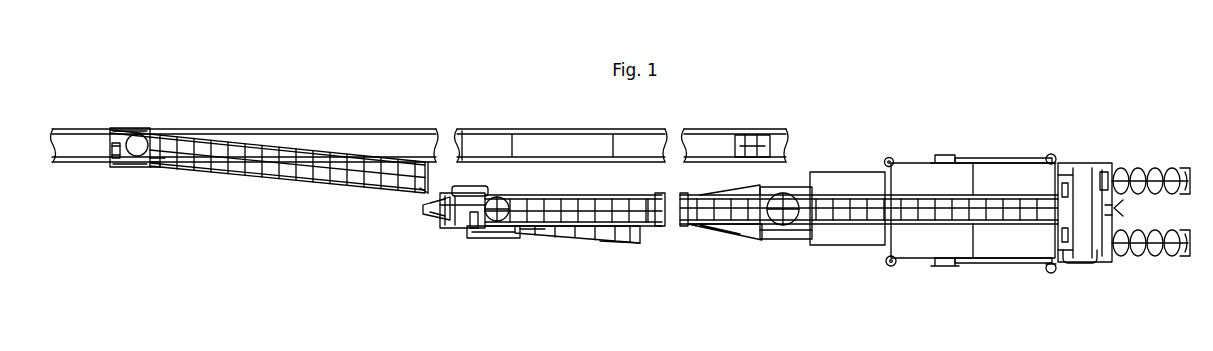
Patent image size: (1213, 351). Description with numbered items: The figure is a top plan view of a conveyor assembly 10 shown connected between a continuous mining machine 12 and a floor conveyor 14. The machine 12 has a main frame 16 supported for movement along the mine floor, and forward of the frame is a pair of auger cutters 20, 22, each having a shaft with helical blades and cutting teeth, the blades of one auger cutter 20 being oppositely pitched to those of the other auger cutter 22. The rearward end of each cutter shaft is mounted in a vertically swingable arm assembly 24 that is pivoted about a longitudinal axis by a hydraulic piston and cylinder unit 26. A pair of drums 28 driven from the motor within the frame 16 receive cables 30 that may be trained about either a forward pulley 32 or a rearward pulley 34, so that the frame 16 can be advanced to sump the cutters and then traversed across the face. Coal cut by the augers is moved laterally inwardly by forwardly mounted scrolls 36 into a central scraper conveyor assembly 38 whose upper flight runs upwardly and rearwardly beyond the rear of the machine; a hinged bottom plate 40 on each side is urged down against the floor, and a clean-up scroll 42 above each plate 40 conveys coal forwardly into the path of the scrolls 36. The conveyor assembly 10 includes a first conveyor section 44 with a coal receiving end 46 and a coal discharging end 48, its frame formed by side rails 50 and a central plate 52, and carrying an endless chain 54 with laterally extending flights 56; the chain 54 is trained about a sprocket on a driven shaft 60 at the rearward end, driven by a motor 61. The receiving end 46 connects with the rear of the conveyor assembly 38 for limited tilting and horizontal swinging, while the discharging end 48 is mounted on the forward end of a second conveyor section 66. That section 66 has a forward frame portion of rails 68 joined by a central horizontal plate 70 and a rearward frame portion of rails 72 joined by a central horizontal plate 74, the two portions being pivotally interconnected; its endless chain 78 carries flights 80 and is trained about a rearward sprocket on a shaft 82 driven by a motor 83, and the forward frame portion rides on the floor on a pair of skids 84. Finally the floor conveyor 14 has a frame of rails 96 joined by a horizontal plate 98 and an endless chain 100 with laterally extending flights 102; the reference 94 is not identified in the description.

The conveyor assembly 10 is at (245, 167).
The continuous mining machine 12 is at (964, 160).
The floor conveyor 14 is at (597, 130).
The main frame 16 is at (915, 261).
The auger cutter 20 is at (1168, 166).
The auger cutter 22 is at (1124, 259).
The vertically swingable arm assembly 24 is at (1086, 168).
The hydraulic piston and cylinder unit 26 is at (1058, 243).
The drum 28 is at (945, 155).
The cable 30 is at (1020, 158).
The forward pulley 32 is at (1050, 154).
The rearward pulley 34 is at (888, 157).
The scroll 36 is at (1132, 211).
The central scraper conveyor assembly 38 is at (870, 248).
The bottom plate 40 is at (1075, 264).
The clean-up scroll 42 is at (1100, 178).
The first conveyor section 44 is at (668, 182).
The coal receiving end 46 is at (772, 232).
The coal discharging end 48 is at (500, 199).
The side rail 50 is at (608, 226).
The central plate 52 is at (642, 221).
The endless chain 54 is at (592, 238).
The flight 56 is at (712, 206).
The driven shaft 60 is at (518, 237).
The motor 61 is at (472, 228).
The second conveyor section 66 is at (412, 196).
The rail 68 is at (560, 231).
The central horizontal plate 70 is at (443, 202).
The rail 72 is at (196, 134).
The central horizontal plate 74 is at (290, 178).
The endless chain 78 is at (260, 146).
The flight 80 is at (225, 172).
The shaft 82 is at (146, 166).
The motor 83 is at (112, 152).
The skid 84 is at (440, 218).
The rail end 94 is at (470, 152).
The rail 96 is at (433, 146).
The horizontal plate 98 is at (362, 142).
The endless chain 100 is at (746, 134).
The flight 102 is at (770, 138).